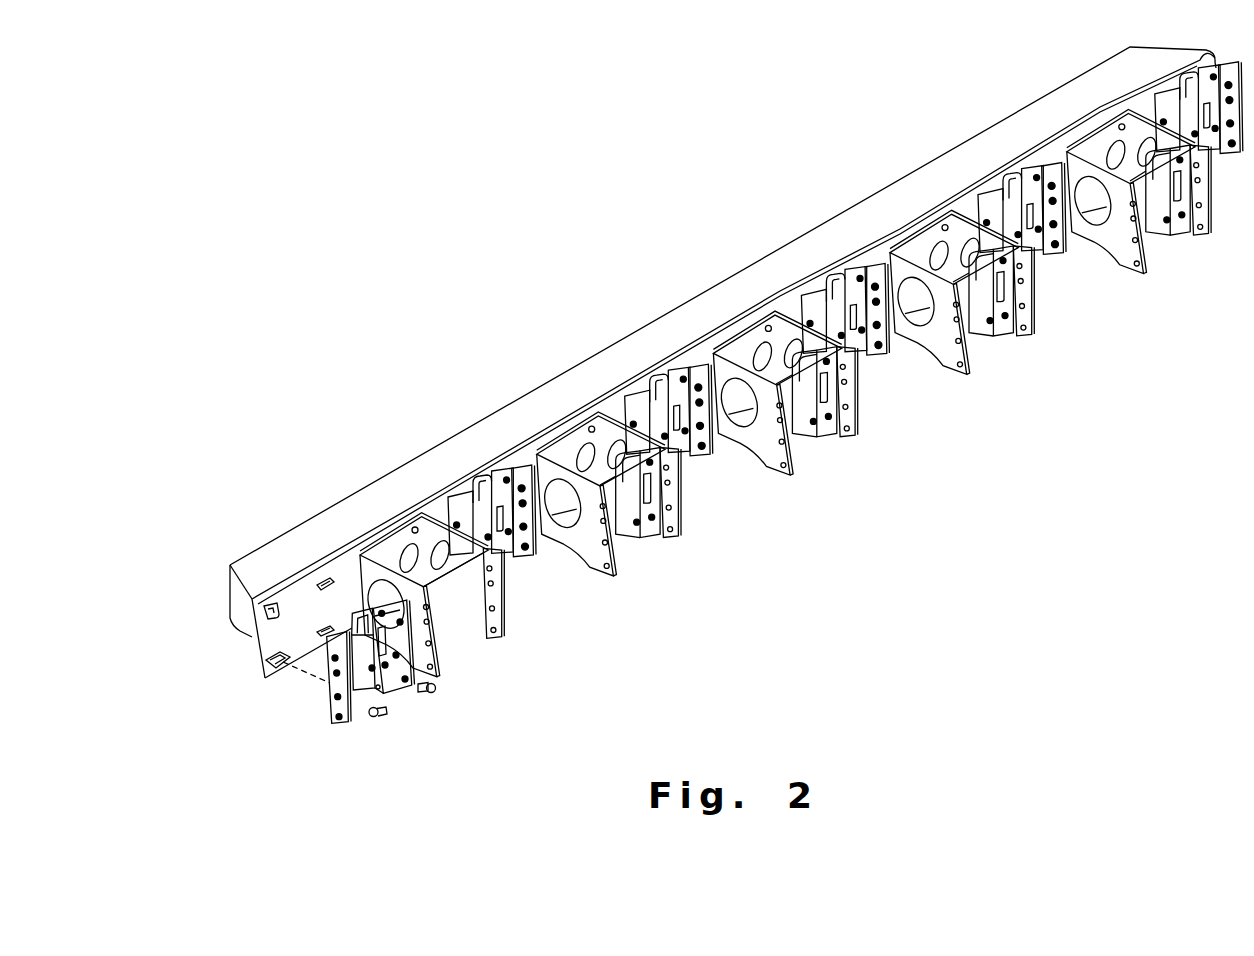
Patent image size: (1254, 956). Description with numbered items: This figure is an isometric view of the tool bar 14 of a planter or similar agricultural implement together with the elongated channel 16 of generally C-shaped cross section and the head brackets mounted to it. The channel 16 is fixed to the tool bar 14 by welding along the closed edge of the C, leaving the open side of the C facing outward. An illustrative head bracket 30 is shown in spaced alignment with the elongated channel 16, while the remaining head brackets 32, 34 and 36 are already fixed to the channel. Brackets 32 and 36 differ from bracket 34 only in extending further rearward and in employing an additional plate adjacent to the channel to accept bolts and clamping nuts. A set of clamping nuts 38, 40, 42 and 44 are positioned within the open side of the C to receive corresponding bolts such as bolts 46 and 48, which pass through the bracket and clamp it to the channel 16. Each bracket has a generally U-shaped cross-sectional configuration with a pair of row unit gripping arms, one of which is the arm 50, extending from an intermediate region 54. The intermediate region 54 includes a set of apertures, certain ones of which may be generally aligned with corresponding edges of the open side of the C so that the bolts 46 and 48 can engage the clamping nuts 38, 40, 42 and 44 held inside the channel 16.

The tool bar 14 is at (229, 566).
The elongated channel 16 is at (257, 653).
The head bracket 30 is at (412, 688).
The head bracket 32 is at (507, 630).
The head bracket 34 is at (537, 550).
The head bracket 36 is at (680, 543).
The clamping nut 38 is at (263, 668).
The clamping nut 40 is at (270, 628).
The clamping nut 42 is at (323, 627).
The clamping nut 44 is at (322, 585).
The bolt 46 is at (375, 718).
The bolt 48 is at (433, 690).
The row unit gripping arm 50 is at (327, 708).
The intermediate region 54 is at (378, 688).